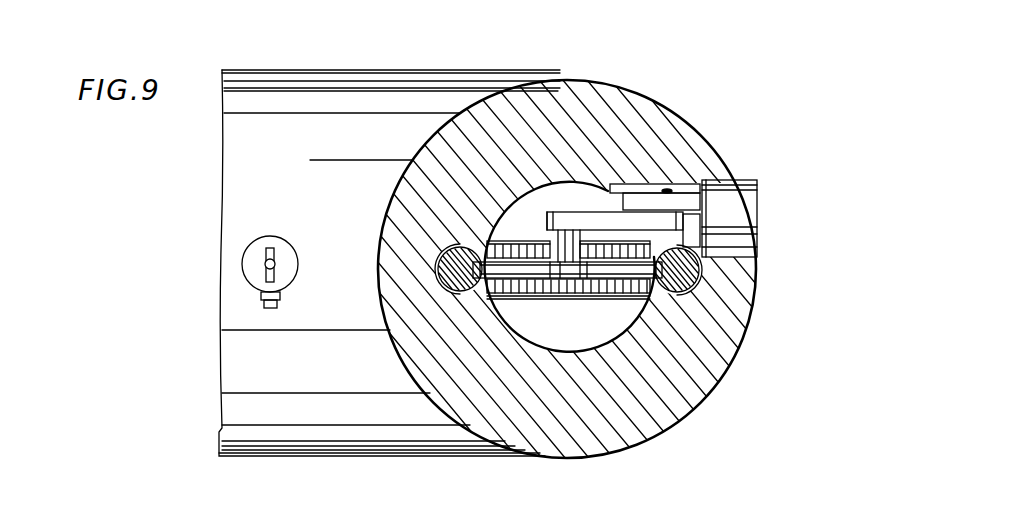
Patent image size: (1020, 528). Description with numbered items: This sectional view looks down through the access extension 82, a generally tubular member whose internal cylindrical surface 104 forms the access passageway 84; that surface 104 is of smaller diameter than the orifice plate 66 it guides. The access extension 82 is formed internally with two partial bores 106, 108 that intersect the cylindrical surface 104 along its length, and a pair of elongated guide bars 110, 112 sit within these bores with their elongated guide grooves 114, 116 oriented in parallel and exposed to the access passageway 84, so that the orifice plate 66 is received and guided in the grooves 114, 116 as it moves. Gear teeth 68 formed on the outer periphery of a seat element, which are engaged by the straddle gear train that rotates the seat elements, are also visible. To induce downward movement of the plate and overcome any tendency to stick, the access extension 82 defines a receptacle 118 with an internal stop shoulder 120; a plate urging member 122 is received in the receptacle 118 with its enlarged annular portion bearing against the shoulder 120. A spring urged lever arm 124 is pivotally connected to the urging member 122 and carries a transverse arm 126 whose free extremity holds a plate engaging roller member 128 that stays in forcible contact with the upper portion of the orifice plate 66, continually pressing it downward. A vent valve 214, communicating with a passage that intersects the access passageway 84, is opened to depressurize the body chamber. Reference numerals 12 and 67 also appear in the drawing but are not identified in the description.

The rail 12 is at (312, 455).
The vent valve 214 is at (250, 262).
The orifice plate 66 is at (510, 248).
The ring portion 67 is at (680, 400).
The gear teeth 68 is at (490, 245).
The access extension 82 is at (633, 100).
The access passageway 84 is at (616, 330).
The internal cylindrical surface 104 is at (537, 342).
The partial bore 106 is at (435, 258).
The partial bore 108 is at (700, 291).
The guide bar 110 is at (440, 333).
The guide bar 112 is at (699, 266).
The guide groove 114 is at (462, 291).
The guide groove 116 is at (627, 285).
The receptacle 118 is at (680, 190).
The internal stop shoulder 120 is at (702, 184).
The plate urging member 122 is at (742, 200).
The spring urged lever arm 124 is at (594, 212).
The transverse arm 126 is at (547, 222).
The plate engaging roller member 128 is at (567, 279).